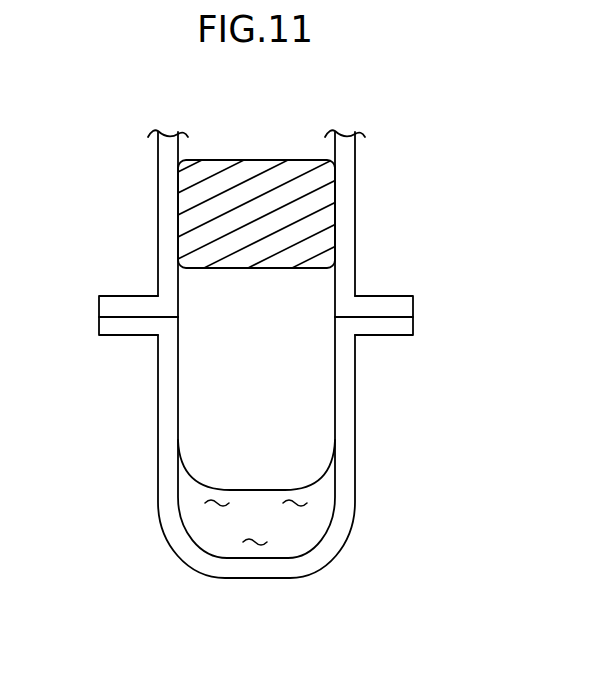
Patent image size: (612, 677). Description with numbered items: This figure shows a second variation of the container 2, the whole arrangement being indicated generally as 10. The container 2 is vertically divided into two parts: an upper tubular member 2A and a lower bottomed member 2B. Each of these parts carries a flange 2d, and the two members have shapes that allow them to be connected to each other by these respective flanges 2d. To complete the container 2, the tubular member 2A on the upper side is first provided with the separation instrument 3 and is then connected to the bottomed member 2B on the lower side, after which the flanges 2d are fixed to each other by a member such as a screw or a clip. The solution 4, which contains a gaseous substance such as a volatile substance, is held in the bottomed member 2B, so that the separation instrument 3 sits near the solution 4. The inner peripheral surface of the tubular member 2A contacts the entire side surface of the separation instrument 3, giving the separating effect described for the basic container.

The cell culture container 10 is at (128, 163).
The container 2 is at (500, 275).
The tubular member 2A is at (356, 274).
The bottomed member 2B is at (356, 358).
The flange 2d is at (125, 295).
The separation instrument 3 is at (328, 223).
The solution 4 is at (253, 552).